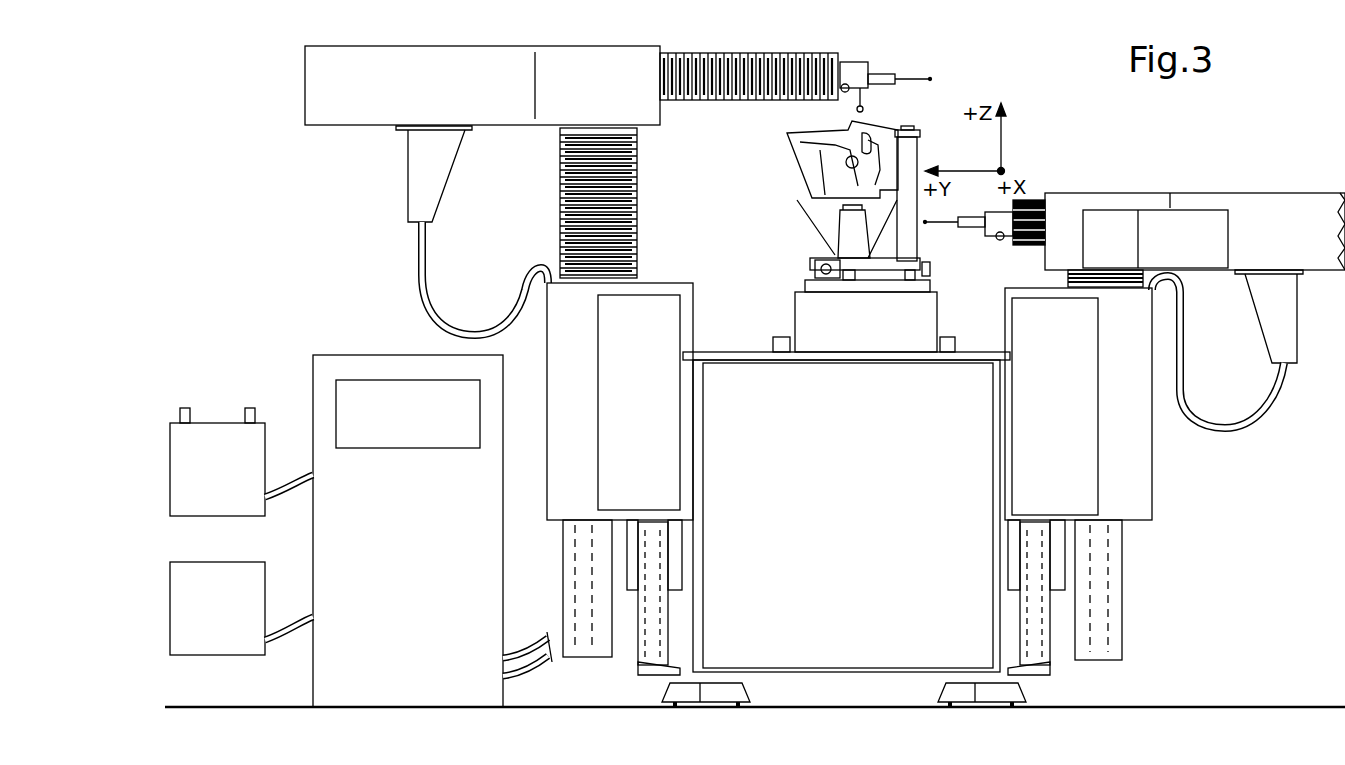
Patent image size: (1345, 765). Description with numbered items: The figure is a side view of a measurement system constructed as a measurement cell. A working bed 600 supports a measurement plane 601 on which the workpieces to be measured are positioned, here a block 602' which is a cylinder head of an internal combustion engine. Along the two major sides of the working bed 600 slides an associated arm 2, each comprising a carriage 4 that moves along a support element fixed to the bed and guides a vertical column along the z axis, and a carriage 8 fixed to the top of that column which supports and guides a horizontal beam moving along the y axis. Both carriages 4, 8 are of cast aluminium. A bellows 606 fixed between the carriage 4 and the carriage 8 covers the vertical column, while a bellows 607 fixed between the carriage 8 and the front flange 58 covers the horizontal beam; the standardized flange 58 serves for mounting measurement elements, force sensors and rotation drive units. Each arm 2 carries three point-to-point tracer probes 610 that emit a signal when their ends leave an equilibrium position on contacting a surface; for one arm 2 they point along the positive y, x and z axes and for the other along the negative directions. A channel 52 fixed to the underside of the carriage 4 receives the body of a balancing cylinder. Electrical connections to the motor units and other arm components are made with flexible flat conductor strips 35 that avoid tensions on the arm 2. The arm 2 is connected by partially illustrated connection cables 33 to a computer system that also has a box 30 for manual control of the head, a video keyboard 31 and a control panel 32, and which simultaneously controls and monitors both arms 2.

The arm 2 is at (562, 48).
The carriage 8 is at (628, 48).
The carriage 4 is at (670, 284).
The box 30 is at (213, 435).
The video keyboard 31 is at (206, 592).
The control panel 32 is at (470, 432).
The connection cables 33 is at (506, 655).
The flat conductor strips 35 is at (636, 636).
The channel 52 is at (585, 574).
The flange 58 is at (856, 48).
The working bed 600 is at (762, 352).
The measurement plane 601 is at (798, 298).
The block 602' is at (808, 179).
The bellows 606 is at (560, 180).
The bellows 607 is at (796, 52).
The tracer probes 610 is at (886, 70).